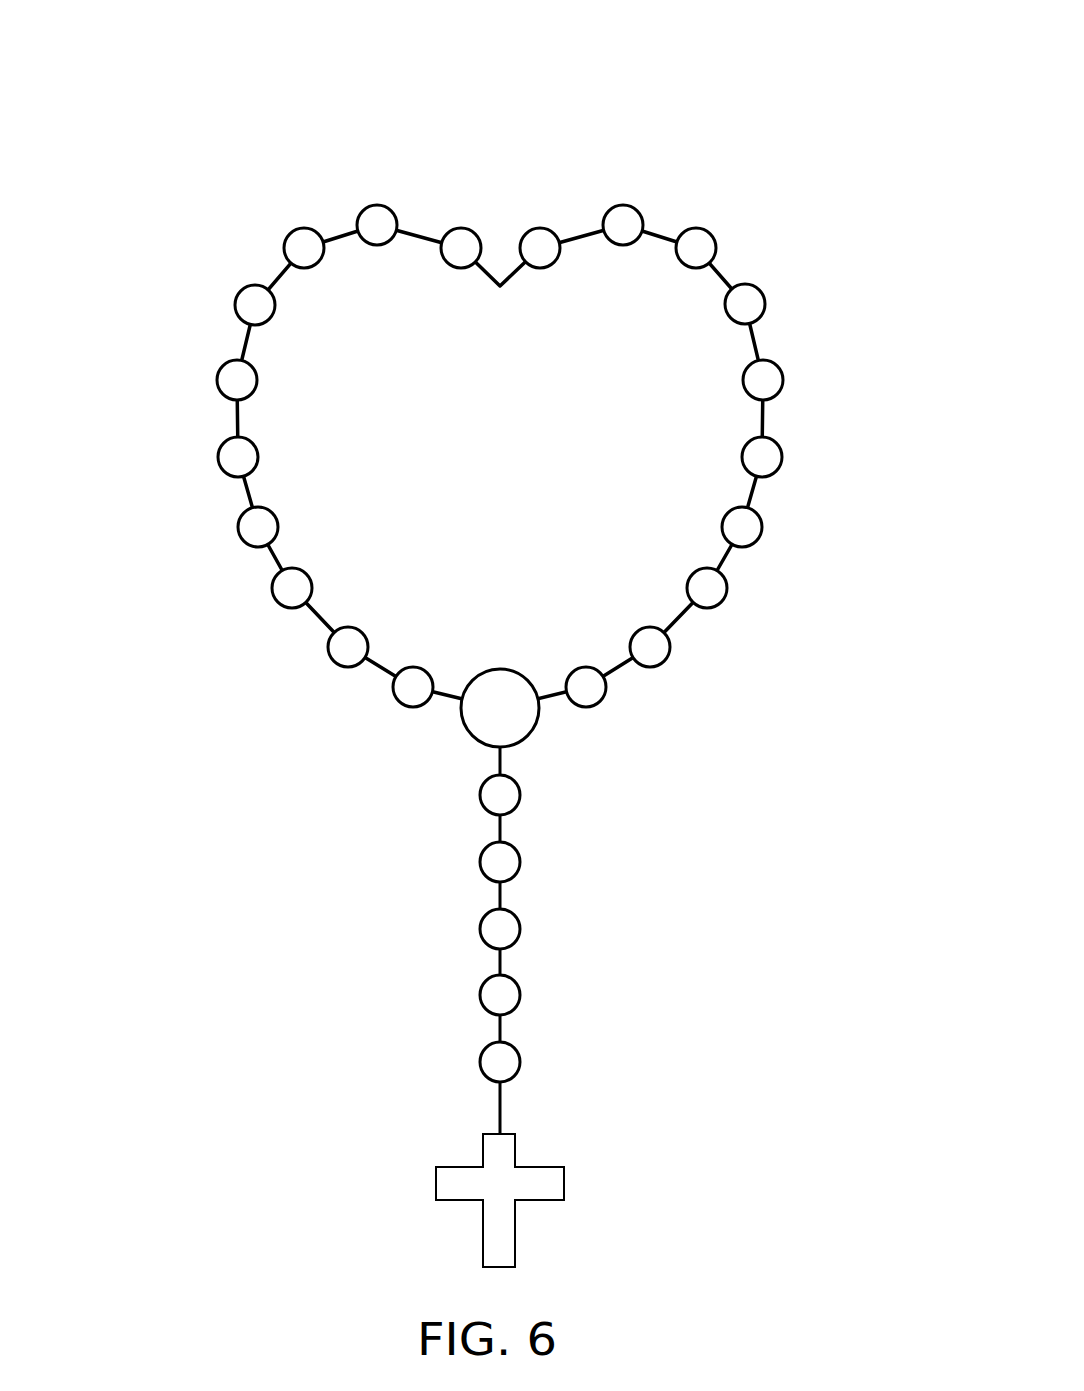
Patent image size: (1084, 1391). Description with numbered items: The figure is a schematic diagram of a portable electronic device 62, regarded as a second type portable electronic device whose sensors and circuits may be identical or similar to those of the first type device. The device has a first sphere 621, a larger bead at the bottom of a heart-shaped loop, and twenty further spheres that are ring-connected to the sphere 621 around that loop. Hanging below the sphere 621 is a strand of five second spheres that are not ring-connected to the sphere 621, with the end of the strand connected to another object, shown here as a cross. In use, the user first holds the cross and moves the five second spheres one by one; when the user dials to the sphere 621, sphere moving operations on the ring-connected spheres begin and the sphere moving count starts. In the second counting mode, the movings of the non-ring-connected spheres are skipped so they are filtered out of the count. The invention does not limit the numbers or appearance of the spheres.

The portable electronic device 62 is at (714, 81).
The sphere 621 is at (498, 690).